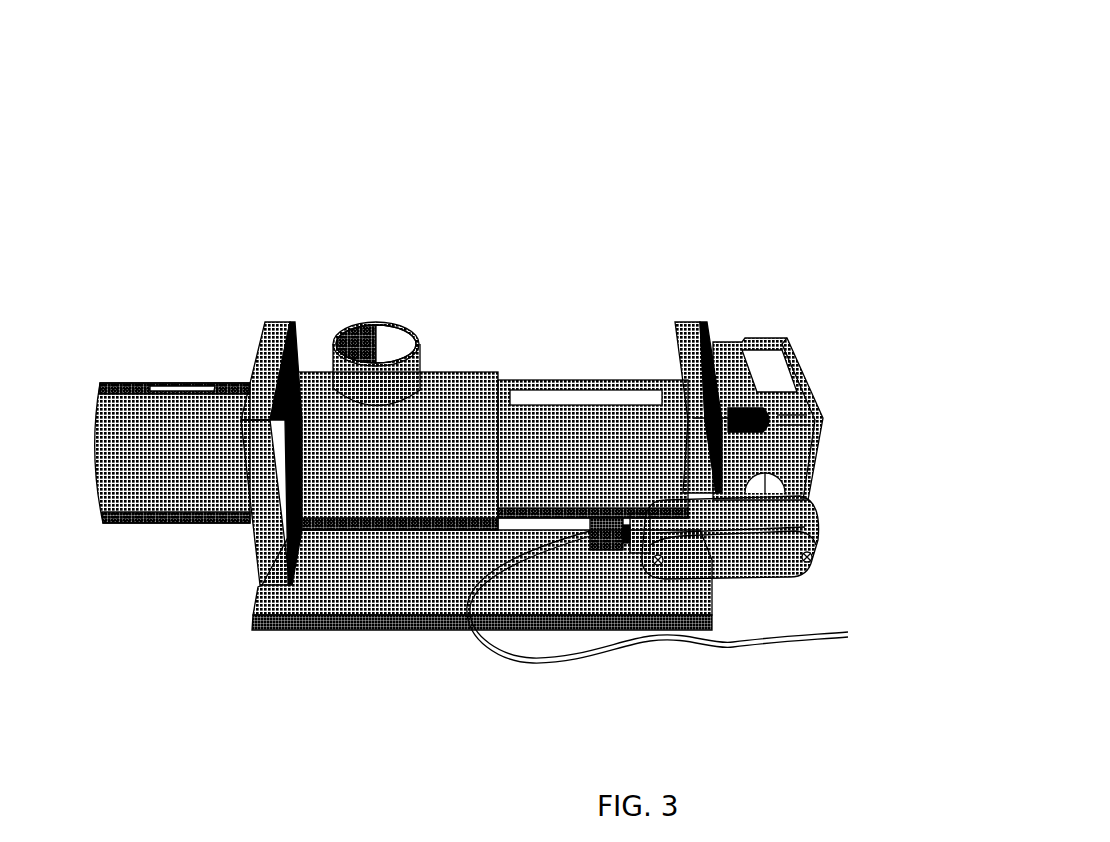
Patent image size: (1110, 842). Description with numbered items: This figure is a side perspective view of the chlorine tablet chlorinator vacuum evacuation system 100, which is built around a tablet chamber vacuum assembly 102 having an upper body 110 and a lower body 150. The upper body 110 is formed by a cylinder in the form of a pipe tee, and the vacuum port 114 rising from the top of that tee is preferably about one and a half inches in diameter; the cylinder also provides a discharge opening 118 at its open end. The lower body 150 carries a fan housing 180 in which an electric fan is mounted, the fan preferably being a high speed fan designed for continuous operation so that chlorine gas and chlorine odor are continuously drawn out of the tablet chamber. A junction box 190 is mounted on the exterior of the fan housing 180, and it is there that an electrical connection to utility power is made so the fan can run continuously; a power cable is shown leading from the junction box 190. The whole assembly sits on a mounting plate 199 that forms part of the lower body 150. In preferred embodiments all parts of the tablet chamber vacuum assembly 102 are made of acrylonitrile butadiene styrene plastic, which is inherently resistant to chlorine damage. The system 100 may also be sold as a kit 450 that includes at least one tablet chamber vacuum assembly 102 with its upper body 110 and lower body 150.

The chlorine tablet chlorinator vacuum evacuation system 100 is at (613, 66).
The tablet chamber vacuum assembly 102 is at (638, 113).
The kit 450 is at (660, 158).
The upper body 110 is at (444, 368).
The vacuum port 114 is at (368, 323).
The discharge opening 118 is at (92, 414).
The lower body 150 is at (597, 378).
The fan housing 180 is at (768, 336).
The junction box 190 is at (824, 550).
The mounting plate 199 is at (366, 636).